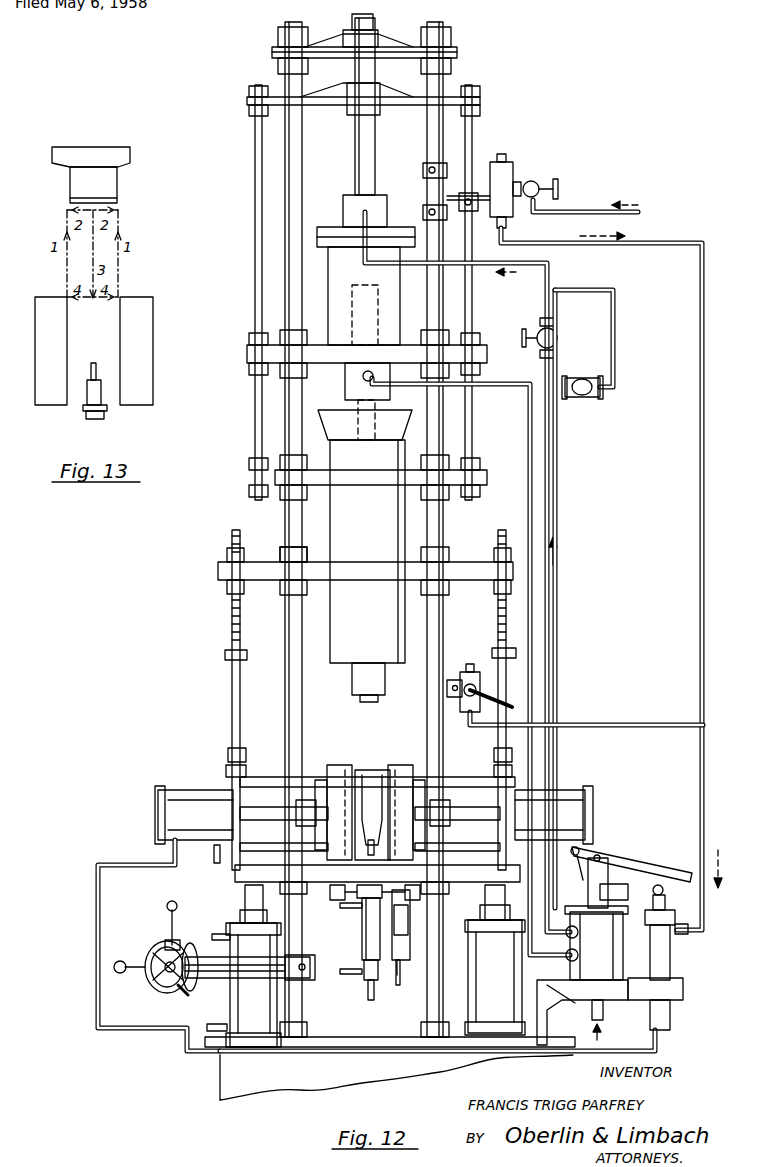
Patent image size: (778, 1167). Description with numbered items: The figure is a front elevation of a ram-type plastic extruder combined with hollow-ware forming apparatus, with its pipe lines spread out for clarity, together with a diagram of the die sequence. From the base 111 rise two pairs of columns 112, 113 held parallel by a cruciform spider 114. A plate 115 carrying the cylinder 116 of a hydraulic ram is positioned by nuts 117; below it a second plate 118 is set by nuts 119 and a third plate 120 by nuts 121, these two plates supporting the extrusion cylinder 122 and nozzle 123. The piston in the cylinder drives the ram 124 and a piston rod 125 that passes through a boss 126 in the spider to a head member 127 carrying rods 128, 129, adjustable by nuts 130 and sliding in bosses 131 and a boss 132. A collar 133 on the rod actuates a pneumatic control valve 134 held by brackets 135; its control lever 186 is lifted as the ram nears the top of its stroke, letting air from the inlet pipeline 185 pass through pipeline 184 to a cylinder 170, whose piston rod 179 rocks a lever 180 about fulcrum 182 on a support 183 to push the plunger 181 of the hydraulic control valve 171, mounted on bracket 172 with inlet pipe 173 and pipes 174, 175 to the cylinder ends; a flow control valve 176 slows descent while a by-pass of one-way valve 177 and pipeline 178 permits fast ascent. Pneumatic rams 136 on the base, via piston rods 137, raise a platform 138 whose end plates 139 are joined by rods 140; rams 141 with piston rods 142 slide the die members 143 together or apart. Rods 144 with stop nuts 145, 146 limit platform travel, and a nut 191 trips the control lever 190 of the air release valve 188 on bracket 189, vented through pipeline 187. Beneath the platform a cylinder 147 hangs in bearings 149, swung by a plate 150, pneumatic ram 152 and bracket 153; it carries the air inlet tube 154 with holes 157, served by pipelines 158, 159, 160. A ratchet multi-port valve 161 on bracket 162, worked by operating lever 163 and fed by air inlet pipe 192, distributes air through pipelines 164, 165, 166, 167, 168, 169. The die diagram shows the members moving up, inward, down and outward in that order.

In FIG. 12, the base 111 is at (222, 1085).
In FIG. 12, the columns 112 is at (285, 420).
In FIG. 12, the columns 113 is at (443, 535).
In FIG. 12, the spider 114 is at (330, 48).
In FIG. 12, the plate 115 is at (247, 354).
In FIG. 12, the cylinder 116 is at (352, 325).
In FIG. 12, the nuts 117 is at (285, 380).
In FIG. 12, the second plate 118 is at (275, 478).
In FIG. 12, the nuts 119 is at (280, 493).
In FIG. 12, the third plate 120 is at (218, 571).
In FIG. 12, the nuts 121 is at (283, 550).
In FIG. 12, the extrusion cylinder 122 is at (392, 498).
In FIG. 13, the nozzle 123 is at (108, 187).
In FIG. 12, the nozzle 123 is at (356, 685).
In FIG. 12, the ram 124 is at (358, 420).
In FIG. 12, the piston rod 125 is at (356, 143).
In FIG. 12, the boss 126 is at (366, 42).
In FIG. 12, the head member 127 is at (332, 104).
In FIG. 12, the rod 128 is at (255, 142).
In FIG. 12, the rod 129 is at (472, 135).
In FIG. 12, the nuts 130 is at (250, 112).
In FIG. 12, the bosses 131 is at (250, 340).
In FIG. 12, the boss 132 is at (477, 460).
In FIG. 12, the collar 133 is at (459, 200).
In FIG. 12, the pneumatic control valve 134 is at (514, 172).
In FIG. 12, the brackets 135 is at (425, 166).
In FIG. 12, the pneumatic rams 136 is at (255, 1040).
In FIG. 12, the piston rods 137 is at (245, 902).
In FIG. 12, the platform 138 is at (235, 875).
In FIG. 12, the plates 139 is at (228, 770).
In FIG. 12, the rods 140 is at (262, 777).
In FIG. 12, the pneumatic rams 141 is at (182, 792).
In FIG. 12, the piston rods 142 is at (268, 812).
In FIG. 13, the die members 143 is at (126, 318).
In FIG. 12, the die members 143 is at (338, 765).
In FIG. 12, the rods 144 is at (498, 615).
In FIG. 12, the stop nuts 145 is at (227, 555).
In FIG. 12, the stop nuts 146 is at (500, 648).
In FIG. 12, the cylinder 147 is at (365, 940).
In FIG. 12, the bearings 149 is at (338, 900).
In FIG. 12, the plate 150 is at (410, 898).
In FIG. 12, the pneumatic ram 152 is at (408, 925).
In FIG. 12, the bracket 153 is at (402, 965).
In FIG. 13, the air inlet tube 154 is at (90, 395).
In FIG. 12, the air inlet tube 154 is at (370, 770).
In FIG. 13, the holes 157 is at (93, 363).
In FIG. 12, the pipeline 158 is at (367, 990).
In FIG. 12, the pipeline 159 is at (352, 974).
In FIG. 12, the pipeline 160 is at (355, 908).
In FIG. 12, the ratchet multi-port valve 161 is at (155, 952).
In FIG. 12, the bracket 162 is at (225, 980).
In FIG. 12, the operating lever 163 is at (167, 918).
In FIG. 12, the pipeline 164 is at (207, 1030).
In FIG. 12, the pipeline 165 is at (216, 936).
In FIG. 12, the pipeline 166 is at (172, 862).
In FIG. 12, the pipeline 167 is at (214, 855).
In FIG. 12, the pipeline 168 is at (400, 985).
In FIG. 12, the pipeline 169 is at (197, 1053).
In FIG. 12, the cylinder 170 is at (672, 960).
In FIG. 12, the hydraulic control valve 171 is at (610, 947).
In FIG. 12, the bracket 172 is at (556, 982).
In FIG. 12, the inlet pipe 173 is at (604, 1010).
In FIG. 12, the pipe 174 is at (557, 632).
In FIG. 12, the pipe 175 is at (548, 652).
In FIG. 12, the flow control valve 176 is at (557, 342).
In FIG. 12, the one-way valve 177 is at (582, 398).
In FIG. 12, the pipeline 178 is at (614, 350).
In FIG. 12, the piston rod 179 is at (665, 900).
In FIG. 12, the lever 180 is at (650, 870).
In FIG. 12, the plunger 181 is at (604, 876).
In FIG. 12, the fulcrum 182 is at (577, 848).
In FIG. 12, the link 183 is at (582, 866).
In FIG. 12, the pipeline 184 is at (703, 468).
In FIG. 12, the air inlet pipeline 185 is at (585, 209).
In FIG. 12, the control lever 186 is at (483, 192).
In FIG. 12, the pipeline 187 is at (616, 723).
In FIG. 12, the air release valve 188 is at (470, 672).
In FIG. 12, the bracket 189 is at (447, 692).
In FIG. 12, the control lever 190 is at (513, 707).
In FIG. 12, the nut 191 is at (228, 752).
In FIG. 12, the air inlet connecting pipe 192 is at (183, 990).